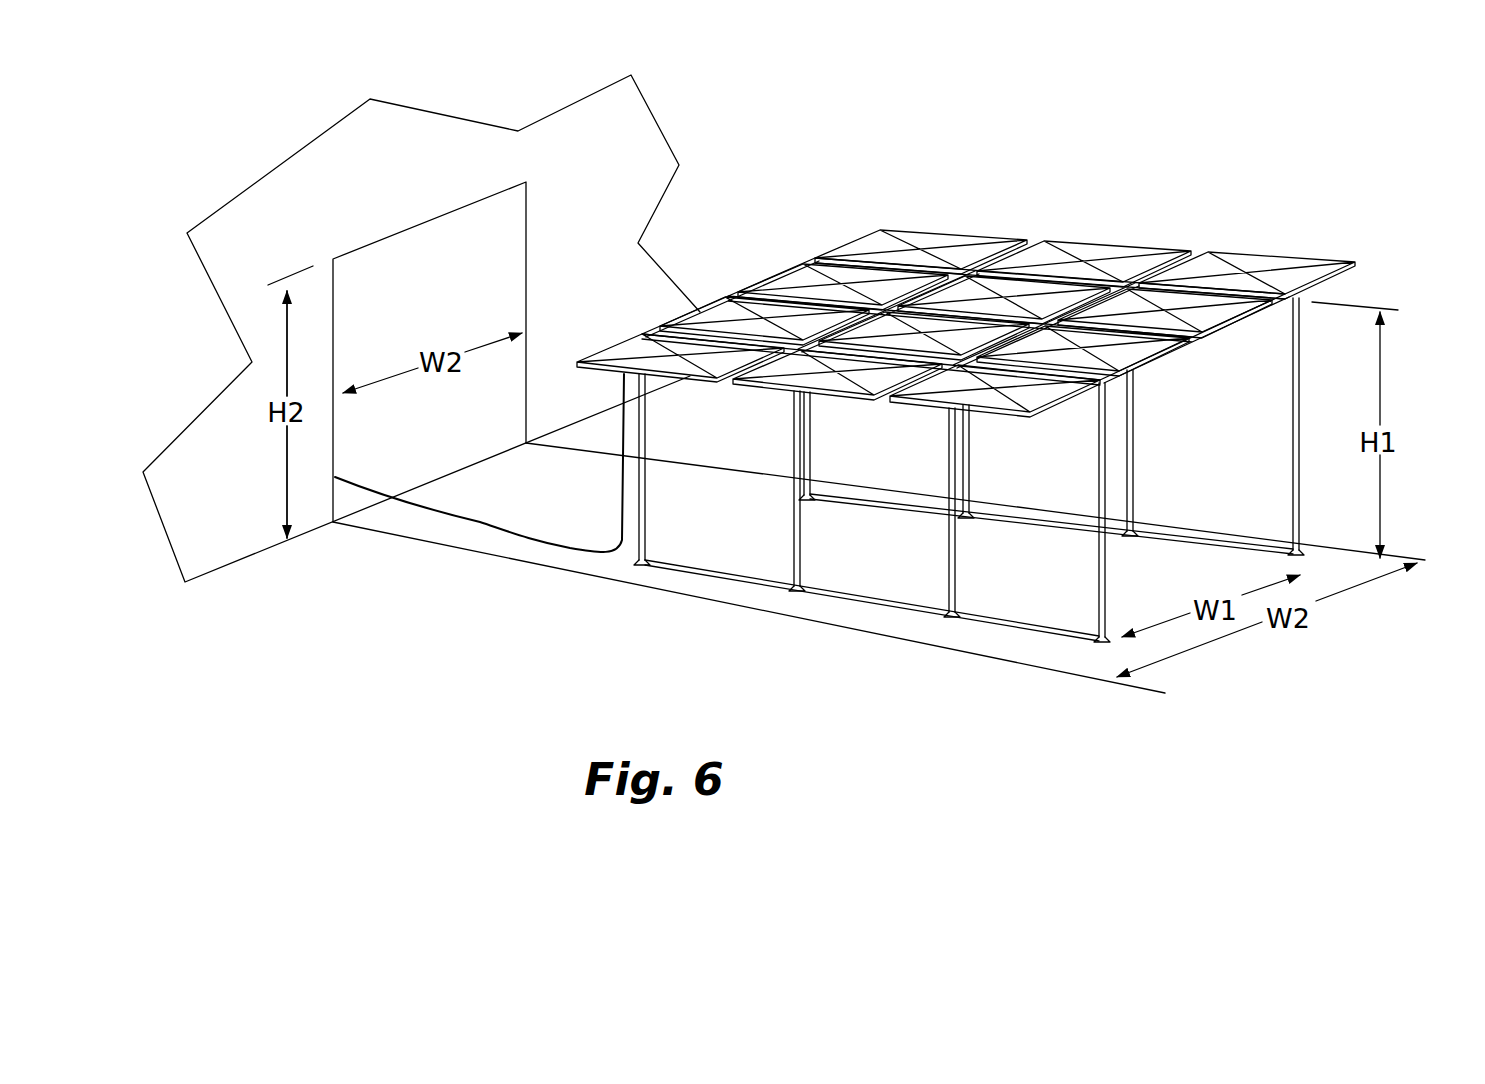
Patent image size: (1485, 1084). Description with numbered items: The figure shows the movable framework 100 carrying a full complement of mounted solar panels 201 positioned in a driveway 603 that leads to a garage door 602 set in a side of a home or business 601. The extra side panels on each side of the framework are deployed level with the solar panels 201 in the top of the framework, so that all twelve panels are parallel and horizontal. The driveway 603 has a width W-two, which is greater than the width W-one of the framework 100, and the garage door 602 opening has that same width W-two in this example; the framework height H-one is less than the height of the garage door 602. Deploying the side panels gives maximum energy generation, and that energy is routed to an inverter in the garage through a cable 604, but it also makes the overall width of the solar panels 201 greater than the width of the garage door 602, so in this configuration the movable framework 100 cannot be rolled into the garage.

The movable framework 100 is at (966, 380).
The solar panels 201 is at (930, 232).
The home or business 601 is at (617, 148).
The garage door 602 is at (497, 237).
The driveway 603 is at (684, 494).
The cable 604 is at (489, 521).